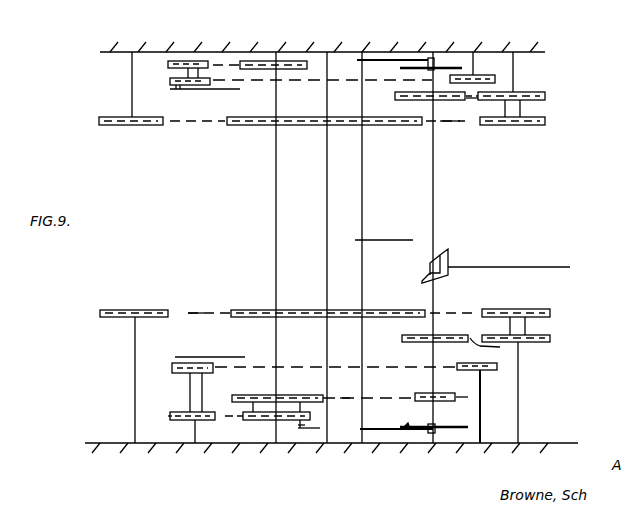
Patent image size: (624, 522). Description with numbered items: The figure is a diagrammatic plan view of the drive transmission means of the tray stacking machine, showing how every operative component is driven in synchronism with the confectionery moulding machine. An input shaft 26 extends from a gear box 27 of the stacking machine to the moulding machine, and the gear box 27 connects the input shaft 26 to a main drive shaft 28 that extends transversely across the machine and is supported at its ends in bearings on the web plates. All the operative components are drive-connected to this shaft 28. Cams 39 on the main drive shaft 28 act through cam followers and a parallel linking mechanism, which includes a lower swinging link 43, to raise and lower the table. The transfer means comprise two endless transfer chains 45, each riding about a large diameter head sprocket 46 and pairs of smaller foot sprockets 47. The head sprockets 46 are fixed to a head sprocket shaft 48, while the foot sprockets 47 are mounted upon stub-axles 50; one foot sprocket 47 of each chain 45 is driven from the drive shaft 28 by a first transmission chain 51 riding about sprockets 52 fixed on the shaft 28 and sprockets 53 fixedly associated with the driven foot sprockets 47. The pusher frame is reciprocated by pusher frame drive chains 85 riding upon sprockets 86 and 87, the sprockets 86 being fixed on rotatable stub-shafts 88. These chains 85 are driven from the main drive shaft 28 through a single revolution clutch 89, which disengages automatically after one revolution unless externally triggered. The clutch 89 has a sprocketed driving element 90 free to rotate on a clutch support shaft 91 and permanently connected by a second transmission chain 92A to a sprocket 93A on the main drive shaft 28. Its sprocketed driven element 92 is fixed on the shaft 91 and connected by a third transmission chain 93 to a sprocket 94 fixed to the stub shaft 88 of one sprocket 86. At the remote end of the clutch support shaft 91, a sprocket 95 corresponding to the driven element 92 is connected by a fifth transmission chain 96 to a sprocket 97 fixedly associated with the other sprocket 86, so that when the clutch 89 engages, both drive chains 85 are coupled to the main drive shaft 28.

The input shaft 26 is at (500, 267).
The gear box 27 is at (446, 262).
The main drive shaft 28 is at (433, 180).
The cams 39 is at (440, 64).
The lower swinging link 43 is at (383, 240).
The endless transfer chains 45 is at (452, 125).
The head sprocket 46 is at (246, 125).
The foot sprockets 47 is at (128, 125).
The head sprocket shaft 48 is at (327, 183).
The stub-axles 50 is at (132, 80).
The first transmission chain 51 is at (470, 90).
The sprockets 52 is at (458, 100).
The sprockets 53 is at (537, 103).
The pusher frame drive chains 85 is at (315, 80).
The sprockets 86 is at (172, 78).
The sprockets 87 is at (486, 75).
The stub-shafts 88 is at (200, 61).
The single revolution clutch 89 is at (244, 428).
The sprocketed driving element 90 is at (240, 395).
The clutch support shaft 91 is at (276, 188).
The sprocketed driven element 92 is at (268, 420).
The second transmission chain 92A is at (347, 399).
The third transmission chain 93 is at (235, 418).
The sprocket 93A is at (415, 432).
The sprocket 94 is at (173, 416).
The sprocket 95 is at (266, 61).
The fifth transmission chain 96 is at (235, 64).
The sprocket 97 is at (178, 61).